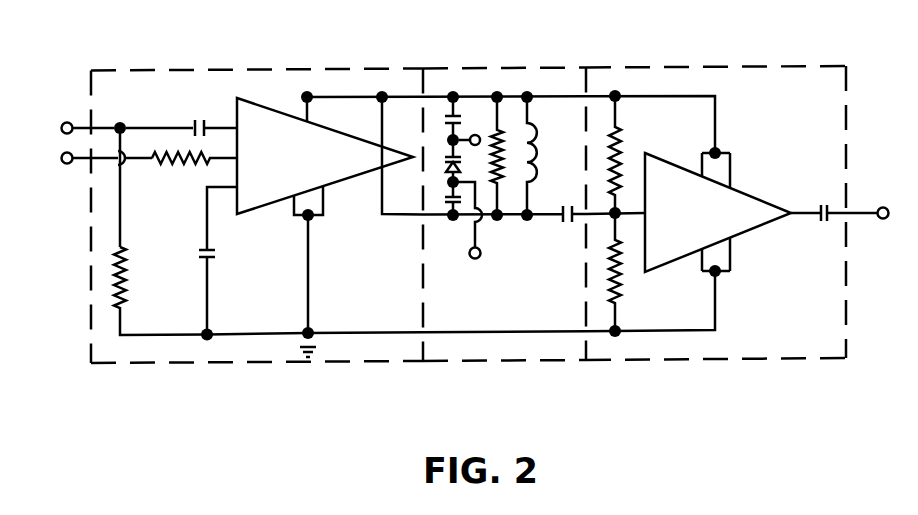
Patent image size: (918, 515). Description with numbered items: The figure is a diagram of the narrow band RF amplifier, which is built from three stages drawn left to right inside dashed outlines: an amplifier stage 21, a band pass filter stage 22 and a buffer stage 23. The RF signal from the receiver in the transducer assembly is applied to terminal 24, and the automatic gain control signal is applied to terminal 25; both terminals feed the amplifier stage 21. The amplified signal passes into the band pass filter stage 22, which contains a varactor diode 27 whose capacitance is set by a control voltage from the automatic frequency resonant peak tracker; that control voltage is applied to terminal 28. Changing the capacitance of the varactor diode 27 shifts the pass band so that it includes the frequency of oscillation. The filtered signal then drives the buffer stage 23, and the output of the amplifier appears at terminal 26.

The amplifier stage 21 is at (208, 70).
The band pass filter stage 22 is at (500, 67).
The buffer stage 23 is at (697, 66).
The terminal 24 is at (67, 122).
The terminal 25 is at (67, 164).
The terminal 26 is at (883, 219).
The varactor diode 27 is at (461, 165).
The terminal 28 is at (481, 253).